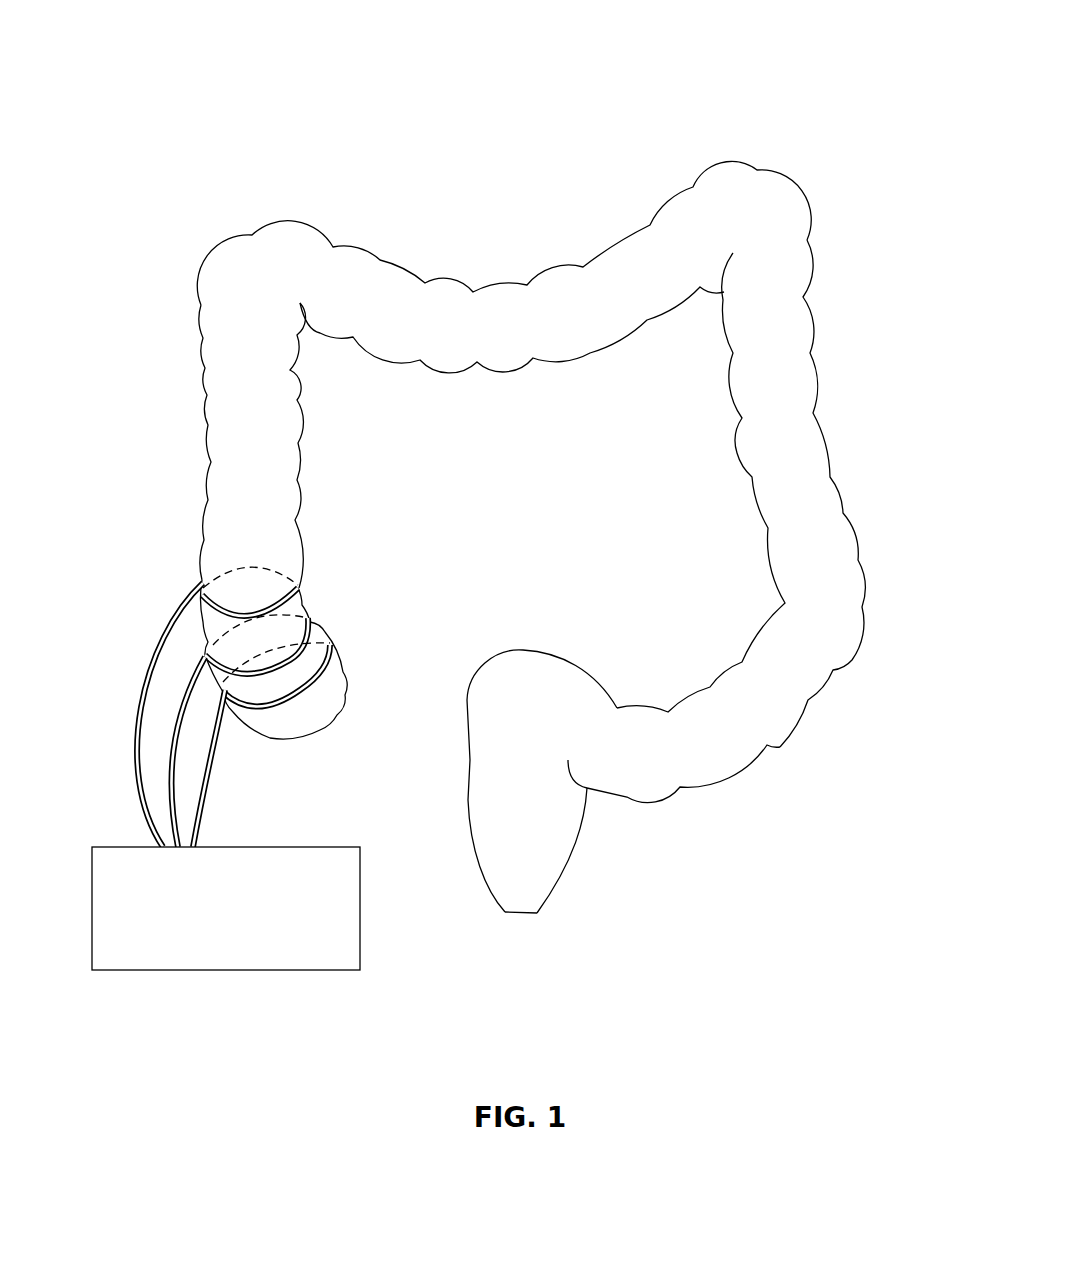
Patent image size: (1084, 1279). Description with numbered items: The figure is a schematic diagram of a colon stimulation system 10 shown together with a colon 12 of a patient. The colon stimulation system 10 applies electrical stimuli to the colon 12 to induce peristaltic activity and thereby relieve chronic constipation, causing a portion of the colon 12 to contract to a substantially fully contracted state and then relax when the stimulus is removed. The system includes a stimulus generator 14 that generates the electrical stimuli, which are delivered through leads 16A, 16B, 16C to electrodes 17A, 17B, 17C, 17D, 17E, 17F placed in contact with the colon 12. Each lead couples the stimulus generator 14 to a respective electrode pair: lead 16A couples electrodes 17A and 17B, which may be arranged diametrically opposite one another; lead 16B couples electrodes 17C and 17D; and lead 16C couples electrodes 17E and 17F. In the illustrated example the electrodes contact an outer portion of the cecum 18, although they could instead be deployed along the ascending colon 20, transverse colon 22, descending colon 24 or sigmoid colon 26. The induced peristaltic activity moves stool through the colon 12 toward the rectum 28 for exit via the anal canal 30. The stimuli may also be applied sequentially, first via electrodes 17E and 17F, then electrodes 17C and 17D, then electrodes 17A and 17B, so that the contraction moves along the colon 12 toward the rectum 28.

The colon stimulation system 10 is at (140, 541).
The colon 12 is at (548, 128).
The stimulus generator 14 is at (213, 948).
The lead 16A is at (140, 767).
The lead 16B is at (183, 720).
The lead 16C is at (207, 793).
The electrode 17A is at (203, 584).
The electrode 17B is at (300, 583).
The electrode 17C is at (203, 662).
The electrode 17D is at (315, 633).
The electrode 17E is at (240, 715).
The electrode 17F is at (330, 660).
The cecum 18 is at (332, 628).
The ascending colon 20 is at (285, 440).
The transverse colon 22 is at (490, 303).
The descending colon 24 is at (805, 440).
The sigmoid colon 26 is at (687, 765).
The rectum 28 is at (490, 813).
The anal canal 30 is at (515, 922).